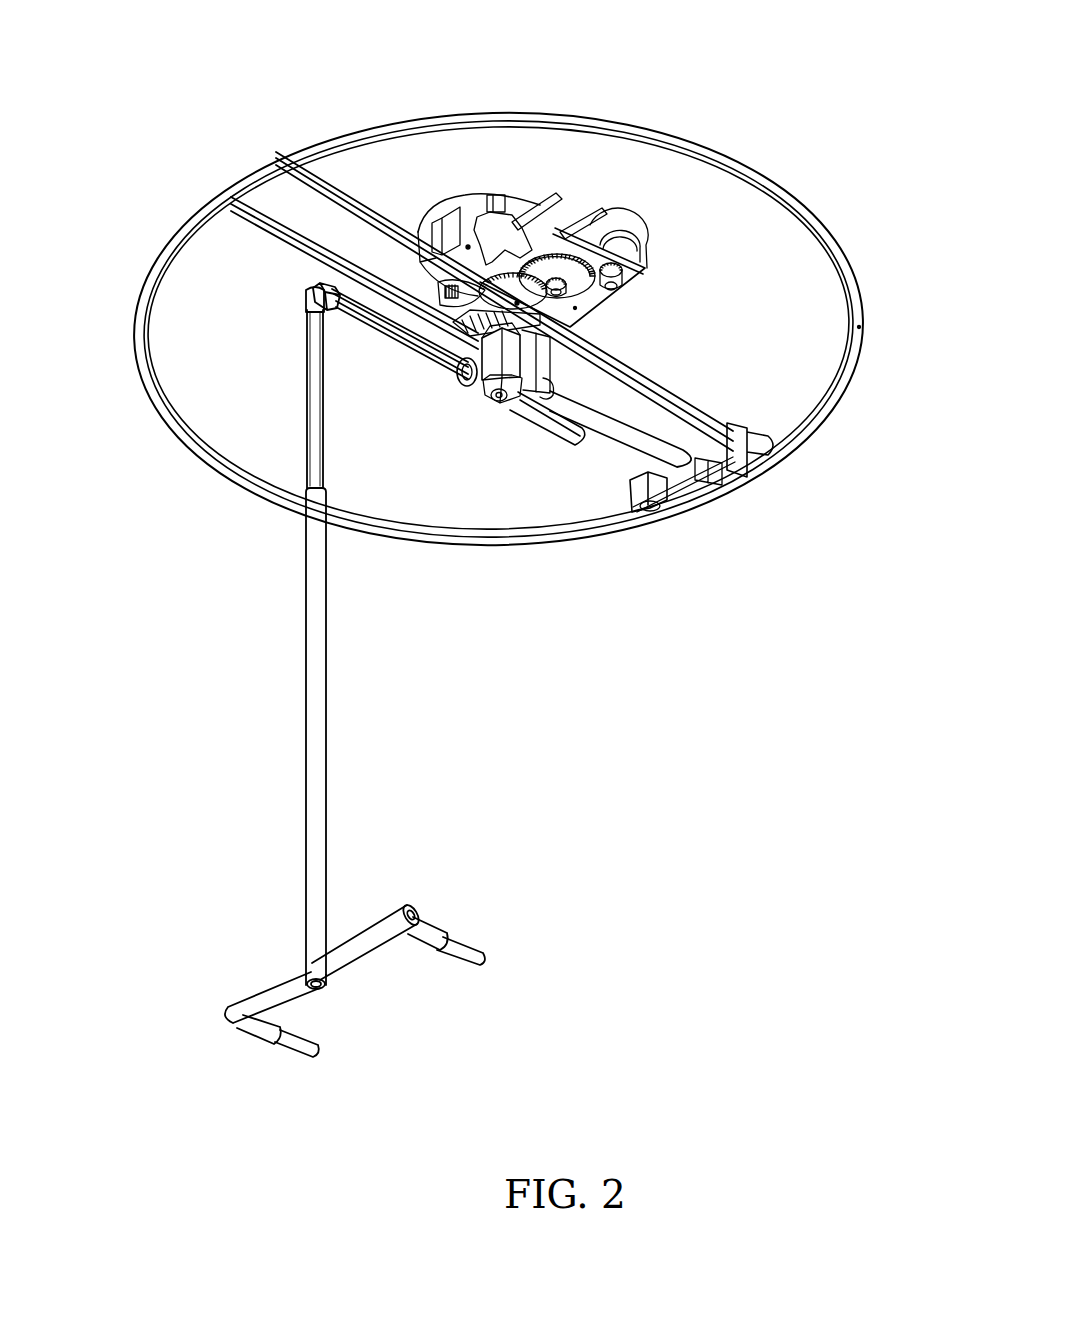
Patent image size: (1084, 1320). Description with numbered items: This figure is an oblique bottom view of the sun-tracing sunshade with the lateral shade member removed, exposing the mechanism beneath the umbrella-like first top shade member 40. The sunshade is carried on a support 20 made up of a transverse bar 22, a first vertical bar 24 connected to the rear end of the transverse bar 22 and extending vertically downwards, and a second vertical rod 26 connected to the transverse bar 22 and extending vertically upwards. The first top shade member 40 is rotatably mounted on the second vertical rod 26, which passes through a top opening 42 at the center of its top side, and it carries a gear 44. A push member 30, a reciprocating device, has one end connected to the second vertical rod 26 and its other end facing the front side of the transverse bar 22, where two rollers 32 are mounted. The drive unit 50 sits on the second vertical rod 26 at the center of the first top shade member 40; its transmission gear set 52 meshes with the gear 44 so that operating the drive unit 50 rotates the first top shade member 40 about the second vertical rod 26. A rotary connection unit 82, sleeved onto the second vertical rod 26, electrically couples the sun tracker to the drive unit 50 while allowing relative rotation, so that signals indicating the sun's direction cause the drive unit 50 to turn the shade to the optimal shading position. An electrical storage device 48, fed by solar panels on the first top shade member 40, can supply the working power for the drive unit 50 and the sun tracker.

The support 20 is at (307, 746).
The transverse bar 22 is at (413, 360).
The first vertical bar 24 is at (305, 656).
The second vertical rod 26 is at (500, 405).
The push member 30 is at (619, 445).
The rollers 32 is at (668, 512).
The first top shade member 40 is at (723, 152).
The top opening 42 is at (473, 208).
The gear 44 is at (553, 400).
The electrical storage device 48 is at (440, 216).
The drive unit 50 is at (618, 212).
The transmission gear set 52 is at (588, 300).
The rotary connection unit 82 is at (465, 345).